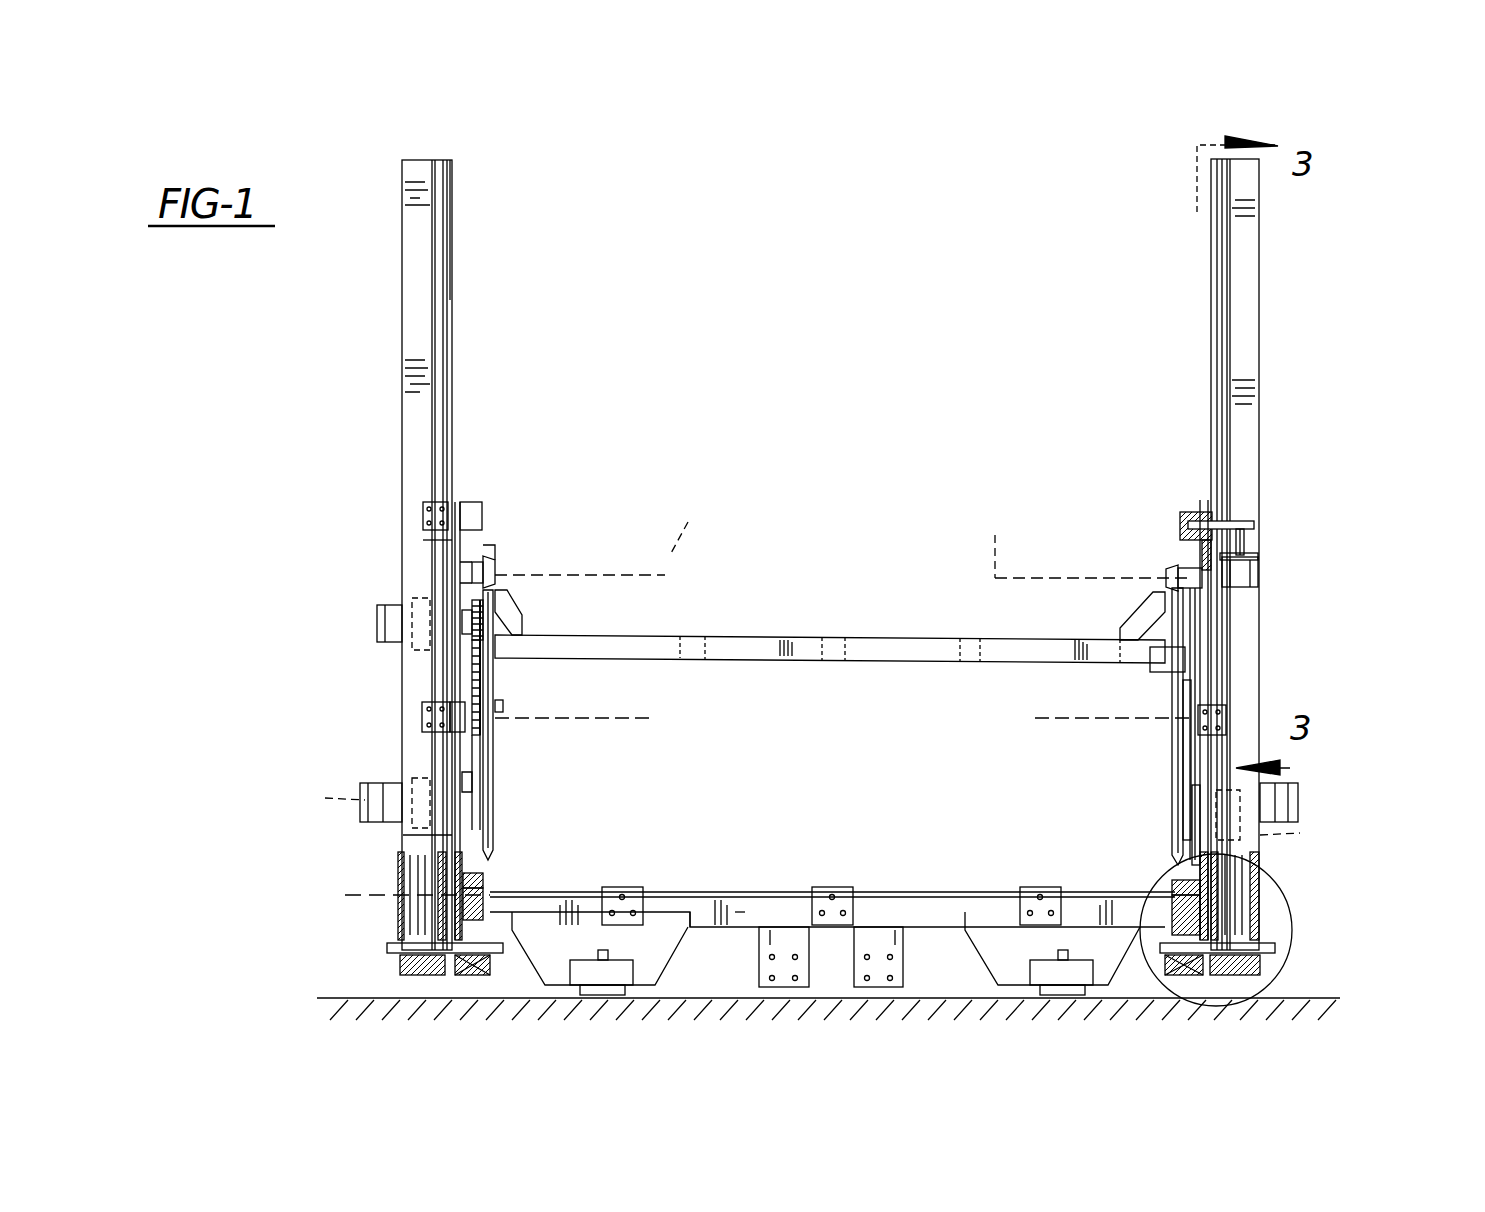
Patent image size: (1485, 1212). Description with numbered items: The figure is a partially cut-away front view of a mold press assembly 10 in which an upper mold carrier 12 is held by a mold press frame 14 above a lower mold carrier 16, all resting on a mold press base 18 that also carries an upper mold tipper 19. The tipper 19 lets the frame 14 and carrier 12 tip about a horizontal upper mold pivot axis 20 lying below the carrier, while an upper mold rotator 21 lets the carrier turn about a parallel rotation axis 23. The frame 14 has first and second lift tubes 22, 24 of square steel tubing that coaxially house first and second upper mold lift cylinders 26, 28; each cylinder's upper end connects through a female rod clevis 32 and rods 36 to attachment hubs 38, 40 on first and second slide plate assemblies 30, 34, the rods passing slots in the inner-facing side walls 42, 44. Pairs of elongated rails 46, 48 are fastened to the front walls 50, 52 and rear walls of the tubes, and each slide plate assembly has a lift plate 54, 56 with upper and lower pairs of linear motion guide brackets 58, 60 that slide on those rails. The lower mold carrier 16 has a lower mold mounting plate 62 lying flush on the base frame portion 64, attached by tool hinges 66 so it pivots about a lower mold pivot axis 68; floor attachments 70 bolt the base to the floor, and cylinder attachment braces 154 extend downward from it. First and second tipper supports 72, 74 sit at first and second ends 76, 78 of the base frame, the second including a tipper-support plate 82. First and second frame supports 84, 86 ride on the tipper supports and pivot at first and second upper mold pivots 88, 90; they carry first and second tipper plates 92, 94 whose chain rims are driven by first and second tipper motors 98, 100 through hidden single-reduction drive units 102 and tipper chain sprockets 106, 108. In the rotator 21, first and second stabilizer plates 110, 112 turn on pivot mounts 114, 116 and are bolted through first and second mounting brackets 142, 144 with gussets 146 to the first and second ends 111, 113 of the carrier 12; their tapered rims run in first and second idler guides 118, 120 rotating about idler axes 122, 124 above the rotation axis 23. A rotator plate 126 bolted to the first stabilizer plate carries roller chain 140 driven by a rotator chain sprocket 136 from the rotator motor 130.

The mold press assembly 10 is at (1428, 288).
The upper mold carrier 12 is at (670, 633).
The mold press frame 14 is at (462, 192).
The lower mold carrier 16 is at (880, 890).
The mold press base 18 is at (785, 968).
The upper mold tipper 19 is at (360, 785).
The upper mold pivot axis 20 is at (385, 940).
The upper mold rotator 21 is at (487, 790).
The first lift tube 22 is at (420, 172).
The rotation axis 23 is at (618, 718).
The second lift tube 24 is at (1255, 265).
The first upper mold lift cylinder 26 is at (430, 867).
The second upper mold lift cylinder 28 is at (1240, 895).
The first slide plate assembly 30 is at (466, 498).
The female rod clevises 32 is at (1262, 520).
The second slide plate assembly 34 is at (1202, 490).
The rods 36 is at (1262, 560).
The attachment hub 38 is at (478, 507).
The attachment hub 40 is at (1200, 508).
The inner-facing side wall 42 is at (452, 170).
The inner-facing side wall 44 is at (1207, 172).
The elongated rails 46 is at (442, 245).
The elongated rails 48 is at (1222, 312).
The front wall 50 is at (410, 240).
The front wall 52 is at (1250, 205).
The lift plate 54 is at (430, 528).
The lift plate 56 is at (1210, 640).
The upper pair of linear motion guide brackets 58 is at (430, 505).
The lower pair of linear motion guide brackets 60 is at (425, 720).
The lower mold mounting plate 62 is at (690, 920).
The base frame portion 64 is at (722, 920).
The tool hinges 66 is at (625, 890).
The lower mold pivot axis 68 is at (345, 895).
The floor attachments 70 is at (650, 960).
The first tipper support 72 is at (486, 908).
The second tipper support 74 is at (1178, 900).
The first end 76 is at (502, 960).
The second end 78 is at (1175, 920).
The second tipper-support plate 82 is at (1170, 930).
The first frame support 84 is at (484, 878).
The second frame support 86 is at (1180, 885).
The first upper mold pivot 88 is at (470, 960).
The second upper mold pivot 90 is at (1200, 985).
The first tipper plate 92 is at (450, 835).
The second tipper plate 94 is at (1175, 870).
The first tipper motor 98 is at (365, 810).
The second tipper motor 100 is at (1290, 805).
The single-reduction drive unit 102 is at (325, 798).
The first tipper chain sprocket 106 is at (472, 780).
The second tipper chain sprocket 108 is at (1200, 805).
The first stabilizer plate 110 is at (502, 800).
The first end 111 is at (523, 648).
The second stabilizer plate 112 is at (1160, 648).
The second end 113 is at (1175, 632).
The pivot mount 114 is at (505, 705).
The pivot mount 116 is at (1195, 720).
The first idler guide 118 is at (485, 560).
The second idler guide 120 is at (1190, 525).
The first idler axis 122 is at (690, 560).
The second idler axis 124 is at (995, 575).
The rotator plate 126 is at (472, 690).
The rotator motor 130 is at (385, 620).
The rotator chain sprocket 136 is at (470, 608).
The roller chain 140 is at (470, 655).
The first mounting bracket 142 is at (490, 570).
The second mounting bracket 144 is at (1190, 570).
The gussets 146 is at (465, 575).
The cylinder attachment braces 154 is at (760, 965).